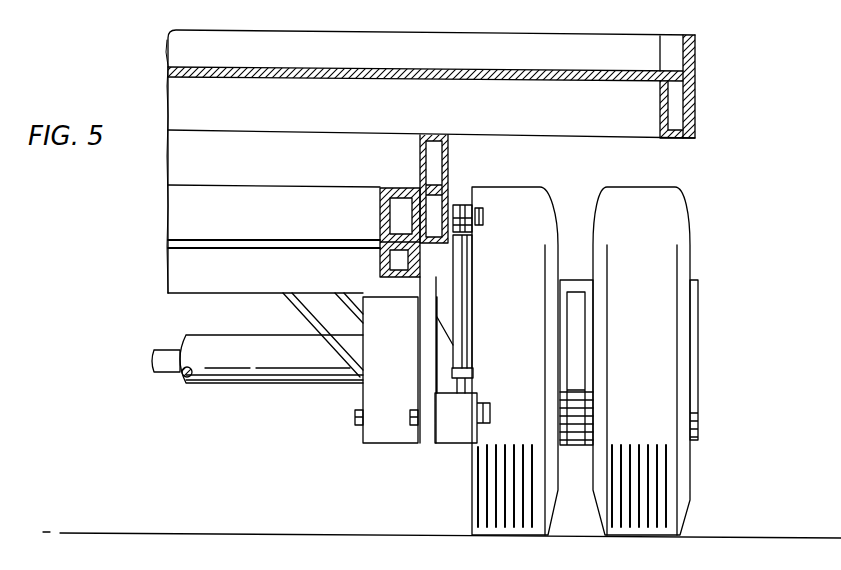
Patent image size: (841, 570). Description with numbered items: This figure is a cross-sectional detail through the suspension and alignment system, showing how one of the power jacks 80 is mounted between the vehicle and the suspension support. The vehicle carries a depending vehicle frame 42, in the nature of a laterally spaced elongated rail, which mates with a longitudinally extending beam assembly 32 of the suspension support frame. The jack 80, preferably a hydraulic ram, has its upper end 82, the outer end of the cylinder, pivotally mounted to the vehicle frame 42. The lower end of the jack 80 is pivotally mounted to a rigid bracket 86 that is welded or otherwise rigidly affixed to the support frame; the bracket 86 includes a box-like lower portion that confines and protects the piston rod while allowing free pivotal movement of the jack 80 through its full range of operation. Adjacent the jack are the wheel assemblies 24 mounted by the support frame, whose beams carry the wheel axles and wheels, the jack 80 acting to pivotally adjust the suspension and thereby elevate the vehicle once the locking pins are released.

The wheel assembly 24 is at (694, 228).
The beam assembly 32 is at (380, 222).
The vehicle frame 42 is at (450, 160).
The power jack 80 is at (476, 320).
The upper end of jack 82 is at (477, 232).
The rigid bracket 86 is at (418, 333).